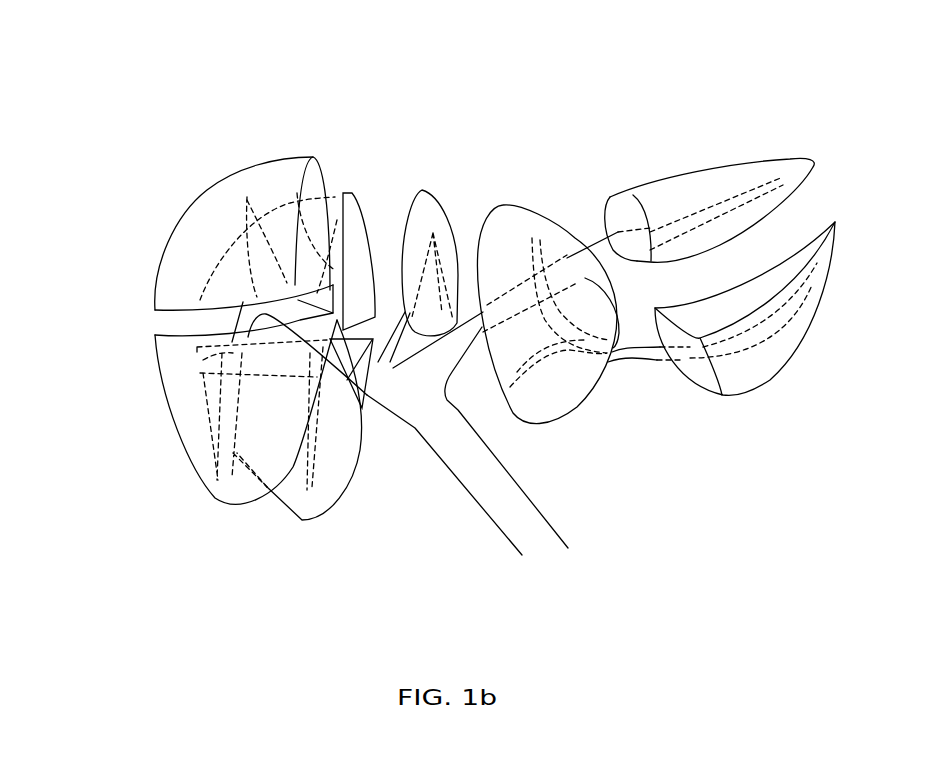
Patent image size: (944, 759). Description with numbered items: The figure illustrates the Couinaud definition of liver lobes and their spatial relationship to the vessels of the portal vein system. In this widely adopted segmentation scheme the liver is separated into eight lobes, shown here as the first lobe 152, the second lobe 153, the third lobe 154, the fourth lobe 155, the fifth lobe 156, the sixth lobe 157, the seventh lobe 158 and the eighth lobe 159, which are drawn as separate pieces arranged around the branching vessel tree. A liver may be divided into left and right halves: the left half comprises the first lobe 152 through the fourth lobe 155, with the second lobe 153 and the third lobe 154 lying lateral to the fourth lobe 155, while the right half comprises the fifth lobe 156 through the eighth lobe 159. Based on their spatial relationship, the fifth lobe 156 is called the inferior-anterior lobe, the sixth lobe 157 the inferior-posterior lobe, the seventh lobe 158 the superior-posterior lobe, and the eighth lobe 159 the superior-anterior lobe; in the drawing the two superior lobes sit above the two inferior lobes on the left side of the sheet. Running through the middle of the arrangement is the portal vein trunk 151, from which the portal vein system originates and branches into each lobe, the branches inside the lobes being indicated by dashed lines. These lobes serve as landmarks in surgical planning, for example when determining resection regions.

The portal vein trunk 151 is at (555, 527).
The lobe 1 152 is at (435, 217).
The lobe 2 153 is at (707, 172).
The lobe 3 154 is at (807, 393).
The lobe 4 155 is at (575, 388).
The lobe 5 156 is at (188, 405).
The lobe 6 157 is at (295, 493).
The lobe 7 158 is at (358, 243).
The lobe 8 159 is at (218, 228).